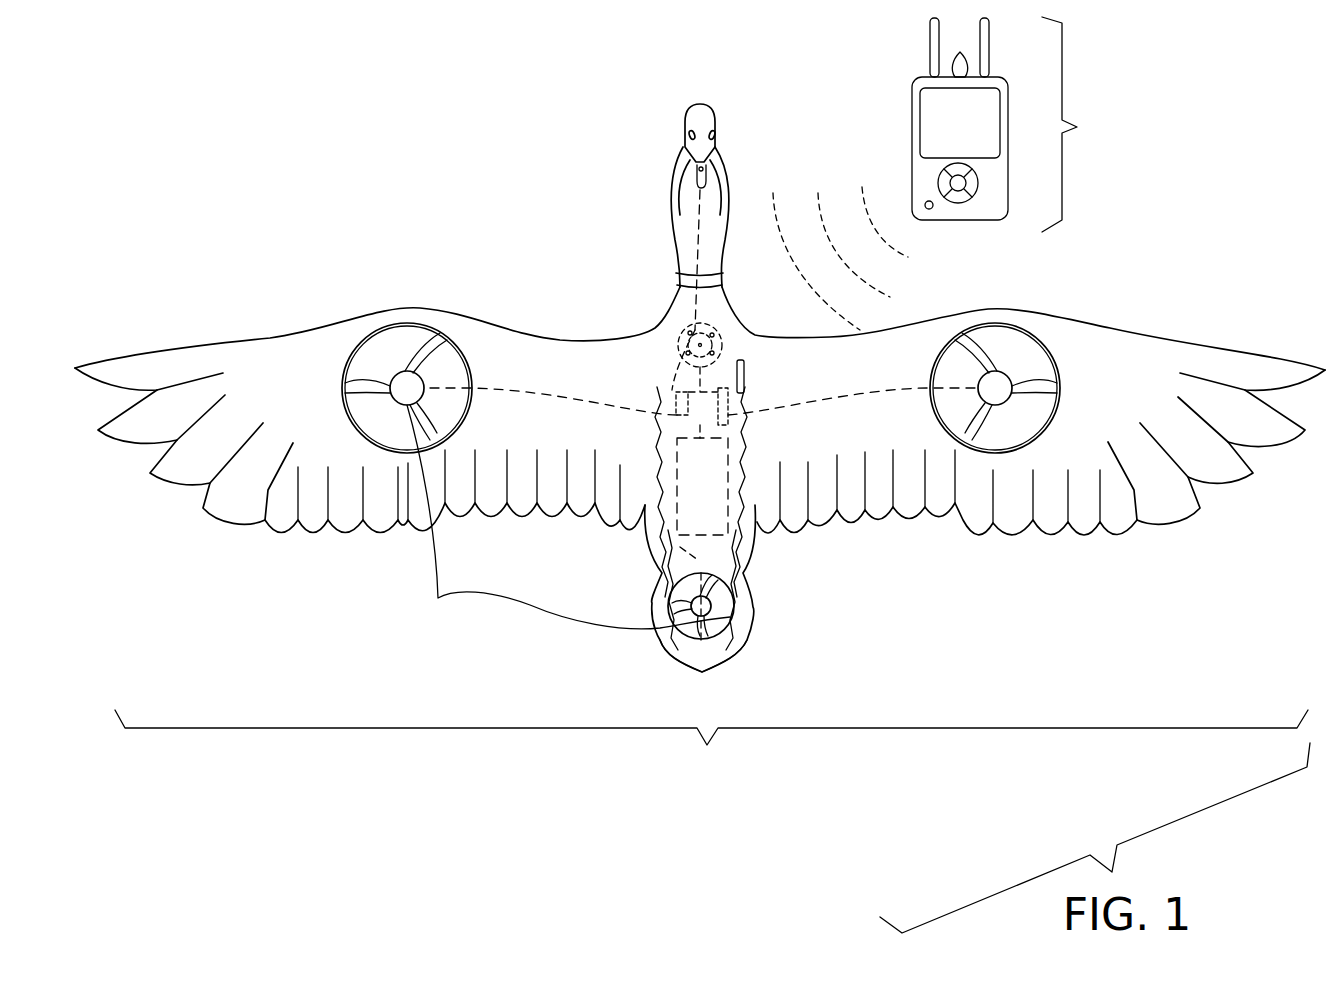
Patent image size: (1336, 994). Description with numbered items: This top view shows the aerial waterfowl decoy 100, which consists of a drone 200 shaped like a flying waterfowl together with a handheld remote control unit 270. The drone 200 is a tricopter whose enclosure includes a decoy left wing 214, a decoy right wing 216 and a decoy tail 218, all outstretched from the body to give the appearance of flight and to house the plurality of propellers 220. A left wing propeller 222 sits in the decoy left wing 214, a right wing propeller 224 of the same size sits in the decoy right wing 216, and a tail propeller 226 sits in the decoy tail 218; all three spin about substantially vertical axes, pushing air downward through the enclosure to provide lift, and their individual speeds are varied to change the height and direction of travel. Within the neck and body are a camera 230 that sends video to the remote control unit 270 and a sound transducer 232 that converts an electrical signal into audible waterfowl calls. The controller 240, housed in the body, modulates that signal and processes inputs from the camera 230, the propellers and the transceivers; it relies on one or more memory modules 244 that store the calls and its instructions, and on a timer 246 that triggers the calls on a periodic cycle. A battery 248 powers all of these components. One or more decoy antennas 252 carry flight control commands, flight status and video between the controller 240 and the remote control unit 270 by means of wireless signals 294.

The aerial waterfowl decoy 100 is at (457, 186).
The drone 200 is at (711, 749).
The decoy left wing 214 is at (522, 357).
The decoy right wing 216 is at (1152, 368).
The decoy tail 218 is at (734, 614).
The plurality of propellers 220 is at (568, 522).
The left wing propeller 222 is at (400, 325).
The right wing propeller 224 is at (998, 388).
The tail propeller 226 is at (730, 617).
The camera 230 is at (697, 163).
The sound transducer 232 is at (707, 325).
The controller 240 is at (683, 417).
The memory modules 244 is at (730, 418).
The timer 246 is at (677, 393).
The battery 248 is at (717, 520).
The decoy antennas 252 is at (745, 373).
The remote control unit 270 is at (1030, 124).
The wireless signals 294 is at (818, 193).